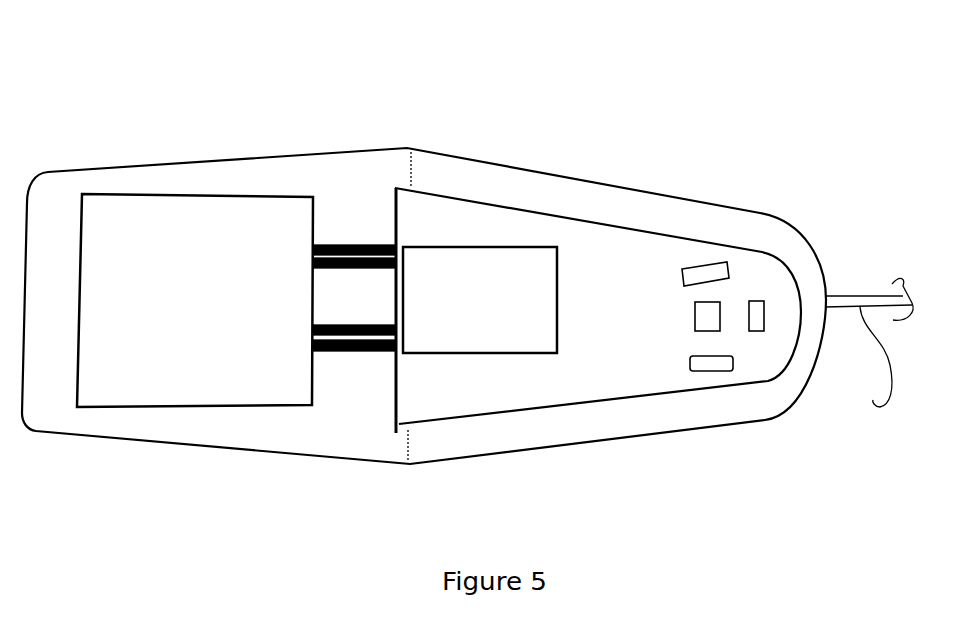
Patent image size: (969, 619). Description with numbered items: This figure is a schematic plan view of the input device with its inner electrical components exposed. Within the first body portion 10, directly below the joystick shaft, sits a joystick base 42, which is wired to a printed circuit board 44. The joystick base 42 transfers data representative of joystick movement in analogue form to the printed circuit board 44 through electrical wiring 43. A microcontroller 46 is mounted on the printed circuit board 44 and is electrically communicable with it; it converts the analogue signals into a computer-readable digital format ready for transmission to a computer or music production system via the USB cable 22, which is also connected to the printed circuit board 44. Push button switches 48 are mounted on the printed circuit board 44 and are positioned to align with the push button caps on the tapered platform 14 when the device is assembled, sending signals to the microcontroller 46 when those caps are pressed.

The first body portion 10 is at (297, 152).
The tapered platform 14 is at (620, 185).
The USB cable 22 is at (869, 359).
The joystick base 42 is at (181, 304).
The electrical wiring 43 is at (350, 243).
The printed circuit board 44 is at (604, 312).
The microcontroller 46 is at (466, 312).
The push button switches 48 is at (728, 264).